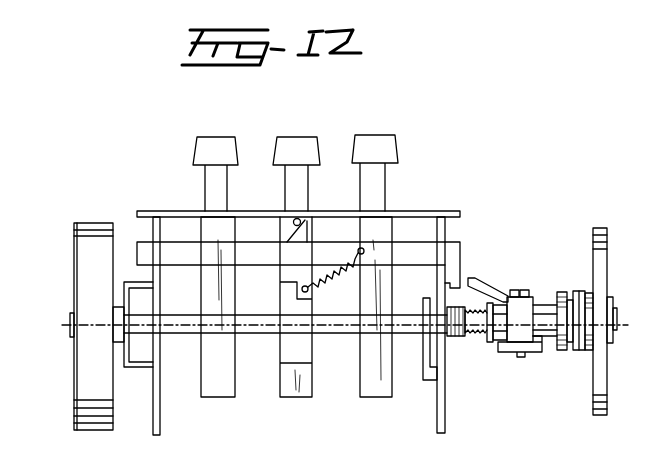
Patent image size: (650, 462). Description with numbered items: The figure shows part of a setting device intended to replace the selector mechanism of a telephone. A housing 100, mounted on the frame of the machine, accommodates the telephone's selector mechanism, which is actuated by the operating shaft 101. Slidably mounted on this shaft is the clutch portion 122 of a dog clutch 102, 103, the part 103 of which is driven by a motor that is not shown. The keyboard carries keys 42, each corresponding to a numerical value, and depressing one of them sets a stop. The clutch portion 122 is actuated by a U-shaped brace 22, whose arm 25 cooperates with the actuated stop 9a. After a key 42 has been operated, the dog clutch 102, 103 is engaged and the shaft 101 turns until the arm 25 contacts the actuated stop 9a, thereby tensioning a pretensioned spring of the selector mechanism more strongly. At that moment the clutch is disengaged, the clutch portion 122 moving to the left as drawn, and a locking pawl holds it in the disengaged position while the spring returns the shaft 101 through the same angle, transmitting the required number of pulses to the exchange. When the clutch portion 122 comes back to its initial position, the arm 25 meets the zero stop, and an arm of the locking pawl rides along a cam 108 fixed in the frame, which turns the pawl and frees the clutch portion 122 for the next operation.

The key 42 is at (200, 147).
The housing 100 is at (82, 272).
The operating shaft 101 is at (270, 333).
The cam 108 is at (410, 373).
The actuated stop 9a is at (455, 268).
The arm 25 is at (472, 278).
The U-shaped brace 22 is at (515, 338).
The clutch portion 122 is at (538, 337).
The dog clutch 102 is at (562, 293).
The clutch part 103 is at (578, 290).